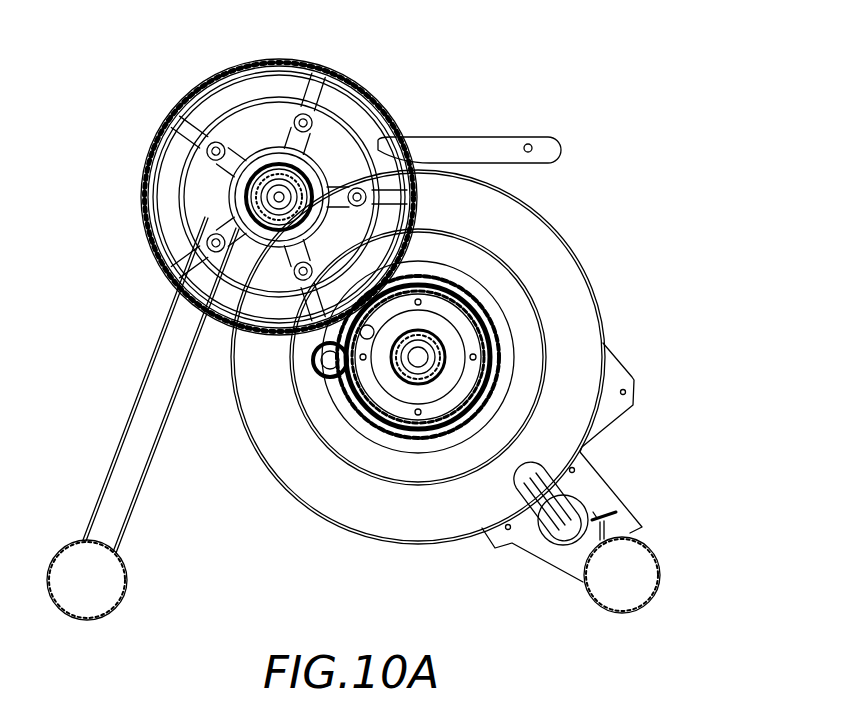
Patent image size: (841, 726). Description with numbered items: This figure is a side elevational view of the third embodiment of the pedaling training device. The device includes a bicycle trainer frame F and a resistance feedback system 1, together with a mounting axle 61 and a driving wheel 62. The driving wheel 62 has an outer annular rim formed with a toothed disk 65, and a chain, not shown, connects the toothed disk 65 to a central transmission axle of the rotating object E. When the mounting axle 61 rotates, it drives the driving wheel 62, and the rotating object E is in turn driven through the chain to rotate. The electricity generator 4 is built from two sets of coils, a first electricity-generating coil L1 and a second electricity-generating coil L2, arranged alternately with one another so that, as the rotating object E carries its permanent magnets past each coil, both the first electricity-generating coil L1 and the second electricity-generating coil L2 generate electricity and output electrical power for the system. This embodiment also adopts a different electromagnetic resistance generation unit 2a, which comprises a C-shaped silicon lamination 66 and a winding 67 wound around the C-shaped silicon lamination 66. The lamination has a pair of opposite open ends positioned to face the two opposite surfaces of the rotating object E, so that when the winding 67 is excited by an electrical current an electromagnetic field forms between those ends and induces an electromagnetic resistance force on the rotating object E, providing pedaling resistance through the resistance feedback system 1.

The resistance feedback system 1 is at (603, 313).
The electromagnetic resistance generation unit 2a is at (577, 490).
The electricity generator 4 is at (513, 327).
The mounting axle 61 is at (278, 172).
The driving wheel 62 is at (322, 130).
The toothed disk 65 is at (353, 88).
The C-shaped silicon lamination 66 is at (523, 550).
The winding 67 is at (550, 547).
The first electricity-generating coil L1 is at (447, 277).
The second electricity-generating coil L2 is at (483, 317).
The rotating object E is at (273, 453).
The bicycle trainer frame F is at (137, 390).